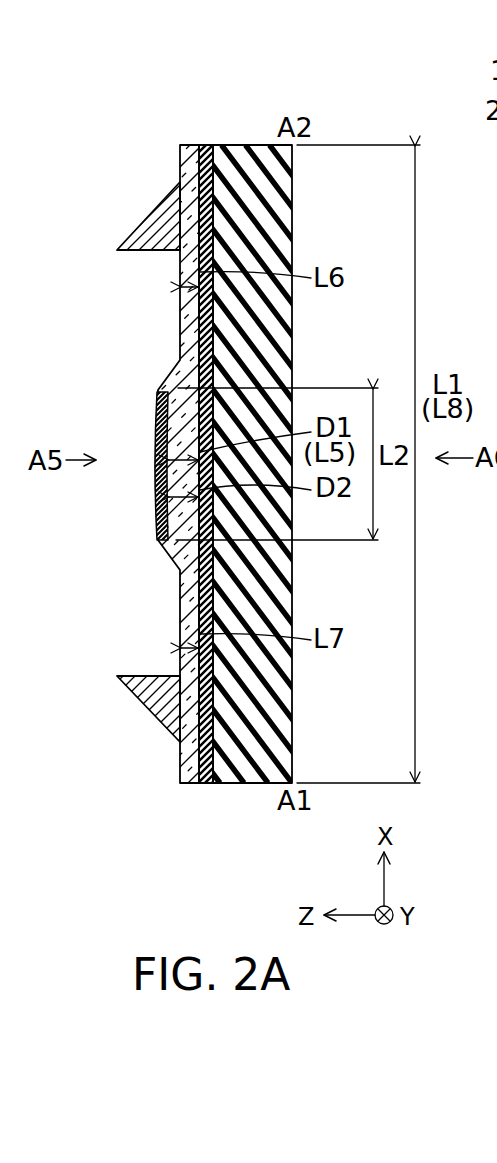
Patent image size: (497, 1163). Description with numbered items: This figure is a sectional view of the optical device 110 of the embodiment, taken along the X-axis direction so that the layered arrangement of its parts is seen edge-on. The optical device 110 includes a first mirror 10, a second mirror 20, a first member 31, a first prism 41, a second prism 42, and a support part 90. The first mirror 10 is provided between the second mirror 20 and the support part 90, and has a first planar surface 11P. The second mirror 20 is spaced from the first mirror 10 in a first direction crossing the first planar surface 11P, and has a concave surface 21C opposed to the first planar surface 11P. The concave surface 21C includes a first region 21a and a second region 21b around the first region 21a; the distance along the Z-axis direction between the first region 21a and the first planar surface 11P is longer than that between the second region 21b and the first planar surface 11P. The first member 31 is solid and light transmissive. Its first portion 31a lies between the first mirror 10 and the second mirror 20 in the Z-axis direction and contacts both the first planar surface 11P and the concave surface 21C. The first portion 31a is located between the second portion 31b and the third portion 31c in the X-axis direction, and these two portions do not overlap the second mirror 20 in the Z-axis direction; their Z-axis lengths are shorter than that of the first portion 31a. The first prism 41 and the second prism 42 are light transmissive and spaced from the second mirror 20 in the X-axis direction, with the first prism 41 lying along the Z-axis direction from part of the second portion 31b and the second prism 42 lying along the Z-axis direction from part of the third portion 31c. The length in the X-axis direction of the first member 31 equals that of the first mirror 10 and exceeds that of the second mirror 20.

The optical device 110 is at (341, 84).
The first mirror 10 is at (207, 163).
The support part 90 is at (240, 163).
The first member 31 is at (190, 160).
The first portion 31a is at (178, 508).
The second portion 31b is at (188, 318).
The third portion 31c is at (190, 608).
The first planar surface 11P is at (197, 372).
The second mirror 20 is at (160, 440).
The concave surface 21C is at (172, 418).
The first region 21a is at (166, 453).
The second region 21b is at (168, 490).
The first prism 41 is at (152, 228).
The second prism 42 is at (152, 695).